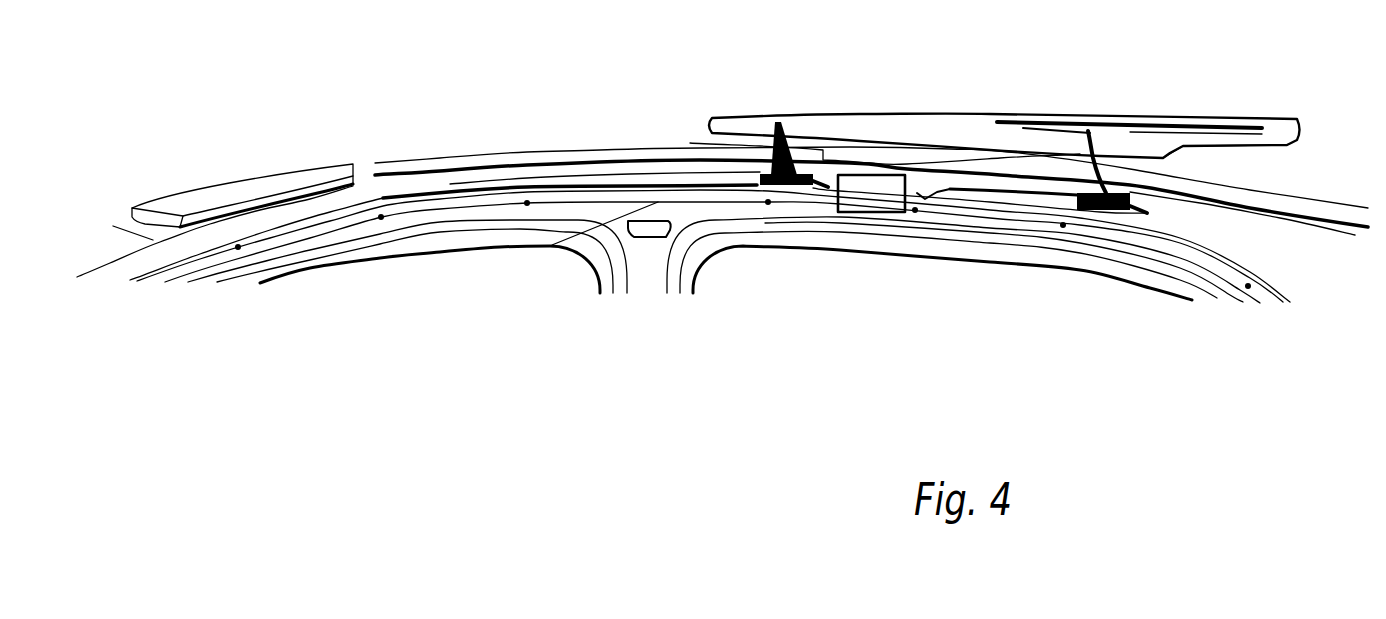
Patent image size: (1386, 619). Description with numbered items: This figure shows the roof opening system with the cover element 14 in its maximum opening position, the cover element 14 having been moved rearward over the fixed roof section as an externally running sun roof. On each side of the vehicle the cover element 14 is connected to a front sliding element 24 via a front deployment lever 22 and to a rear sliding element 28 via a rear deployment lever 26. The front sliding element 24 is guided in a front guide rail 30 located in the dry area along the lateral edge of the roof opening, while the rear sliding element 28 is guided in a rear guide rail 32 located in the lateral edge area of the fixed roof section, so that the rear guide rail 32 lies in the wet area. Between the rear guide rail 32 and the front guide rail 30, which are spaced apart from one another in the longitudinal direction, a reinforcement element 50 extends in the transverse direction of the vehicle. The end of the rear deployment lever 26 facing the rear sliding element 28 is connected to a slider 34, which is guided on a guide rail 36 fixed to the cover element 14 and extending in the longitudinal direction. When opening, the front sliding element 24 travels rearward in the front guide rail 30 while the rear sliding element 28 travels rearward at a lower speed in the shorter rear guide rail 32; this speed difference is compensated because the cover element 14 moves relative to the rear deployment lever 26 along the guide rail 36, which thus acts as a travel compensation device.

The cover element 14 is at (878, 117).
The front deployment lever 22 is at (692, 148).
The front sliding element 24 is at (786, 188).
The rear deployment lever 26 is at (1098, 160).
The rear sliding element 28 is at (1108, 212).
The front guide rail 30 is at (503, 187).
The rear guide rail 32 is at (987, 196).
The slider 34 is at (1037, 121).
The guide rail fixed to the cover element 36 is at (1203, 140).
The reinforcement element 50 is at (871, 203).